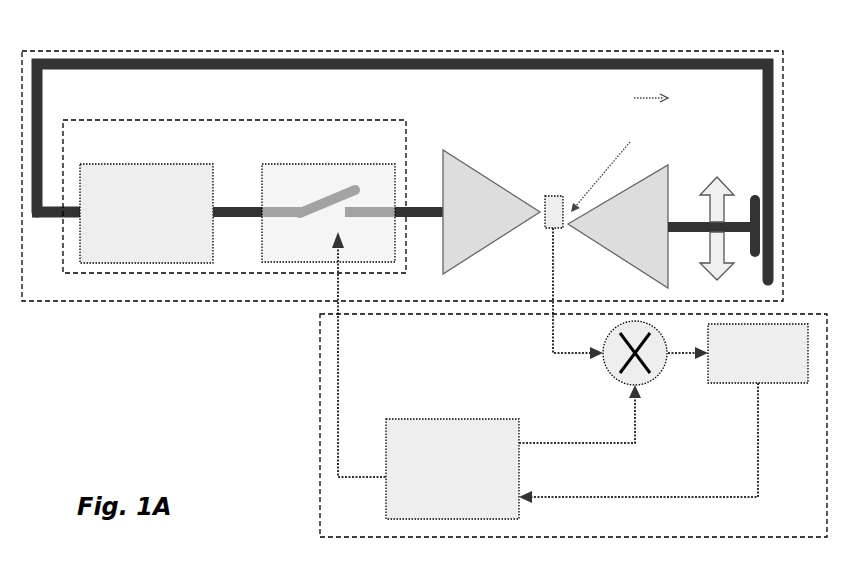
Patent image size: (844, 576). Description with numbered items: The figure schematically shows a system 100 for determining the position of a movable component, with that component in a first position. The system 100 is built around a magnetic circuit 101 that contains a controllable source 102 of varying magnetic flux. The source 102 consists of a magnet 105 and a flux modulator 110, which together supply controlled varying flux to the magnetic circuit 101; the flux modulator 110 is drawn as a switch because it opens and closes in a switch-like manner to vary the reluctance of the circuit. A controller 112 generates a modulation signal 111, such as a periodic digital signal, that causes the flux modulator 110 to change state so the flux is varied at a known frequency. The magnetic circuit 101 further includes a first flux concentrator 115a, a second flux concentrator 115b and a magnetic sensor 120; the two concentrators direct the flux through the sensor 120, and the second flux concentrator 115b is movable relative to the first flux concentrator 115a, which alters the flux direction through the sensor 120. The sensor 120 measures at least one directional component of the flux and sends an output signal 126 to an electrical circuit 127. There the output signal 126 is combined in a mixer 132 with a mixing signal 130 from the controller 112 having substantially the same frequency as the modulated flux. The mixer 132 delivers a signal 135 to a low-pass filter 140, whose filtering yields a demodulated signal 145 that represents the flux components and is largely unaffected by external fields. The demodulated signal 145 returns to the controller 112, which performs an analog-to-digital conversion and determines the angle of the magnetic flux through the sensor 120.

The system 100 is at (184, 361).
The magnetic circuit 101 is at (328, 51).
The controllable source of varying magnetic flux 102 is at (217, 120).
The magnet 105 is at (175, 190).
The flux modulator 110 is at (383, 198).
The modulation signal 111 is at (317, 310).
The controller 112 is at (493, 440).
The first flux concentrator 115a is at (480, 232).
The second flux concentrator 115b is at (603, 232).
The magnetic sensor 120 is at (547, 197).
The output signal 126 is at (550, 342).
The electrical circuit 127 is at (318, 370).
The mixing signal 130 is at (632, 438).
The mixer 132 is at (617, 358).
The mixer output signal 135 is at (705, 355).
The low-pass filter 140 is at (785, 370).
The demodulated signal 145 is at (712, 497).